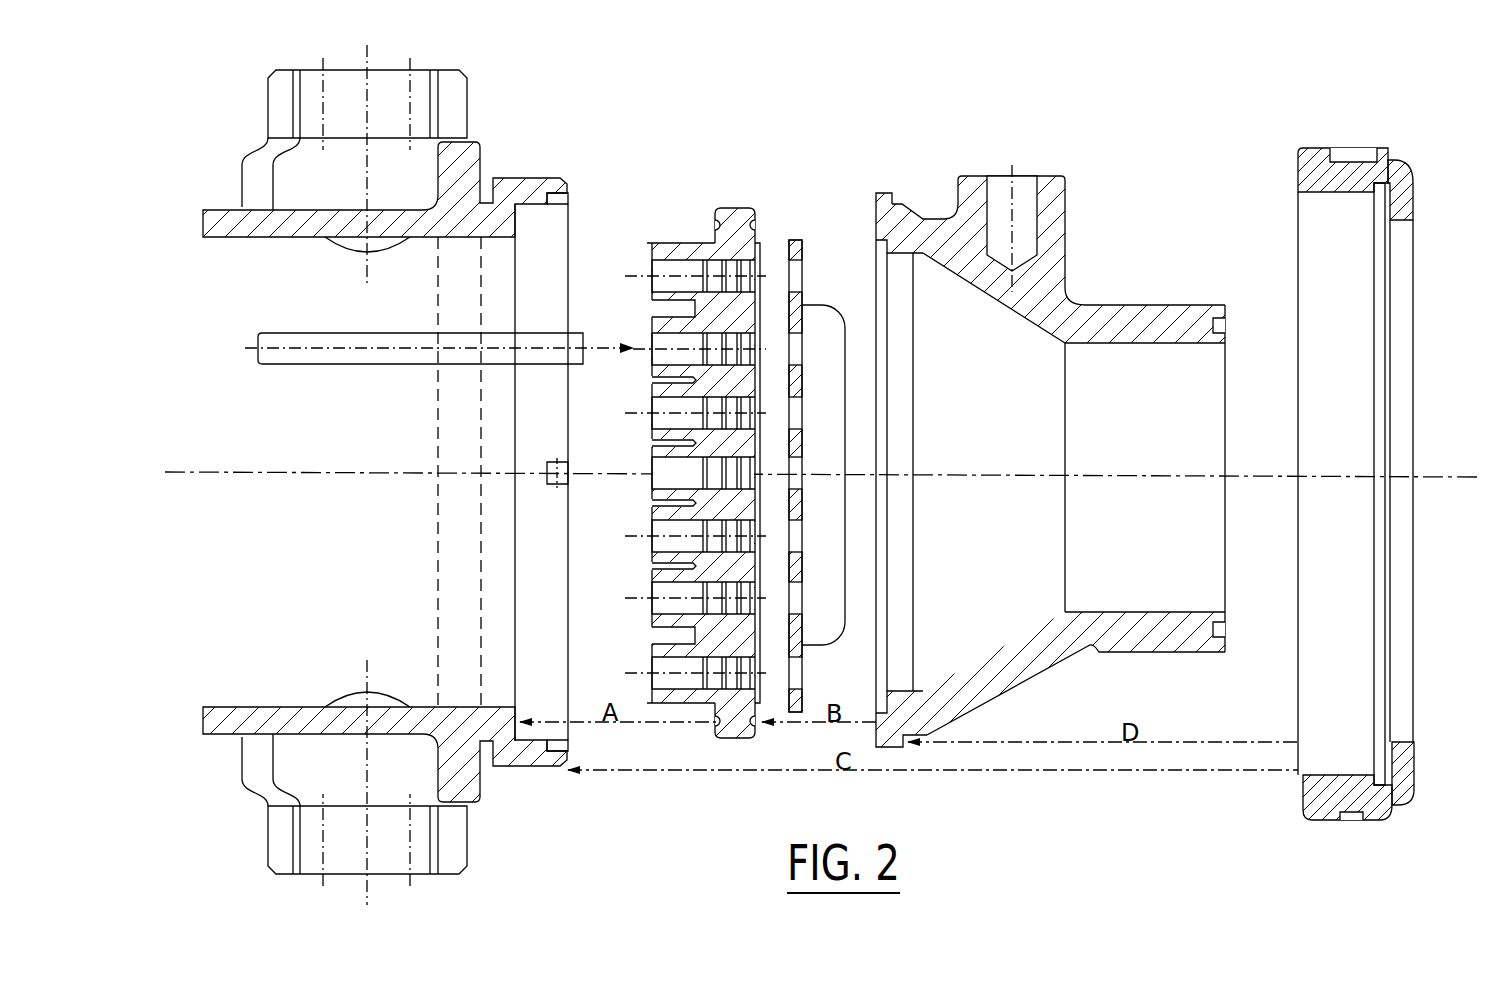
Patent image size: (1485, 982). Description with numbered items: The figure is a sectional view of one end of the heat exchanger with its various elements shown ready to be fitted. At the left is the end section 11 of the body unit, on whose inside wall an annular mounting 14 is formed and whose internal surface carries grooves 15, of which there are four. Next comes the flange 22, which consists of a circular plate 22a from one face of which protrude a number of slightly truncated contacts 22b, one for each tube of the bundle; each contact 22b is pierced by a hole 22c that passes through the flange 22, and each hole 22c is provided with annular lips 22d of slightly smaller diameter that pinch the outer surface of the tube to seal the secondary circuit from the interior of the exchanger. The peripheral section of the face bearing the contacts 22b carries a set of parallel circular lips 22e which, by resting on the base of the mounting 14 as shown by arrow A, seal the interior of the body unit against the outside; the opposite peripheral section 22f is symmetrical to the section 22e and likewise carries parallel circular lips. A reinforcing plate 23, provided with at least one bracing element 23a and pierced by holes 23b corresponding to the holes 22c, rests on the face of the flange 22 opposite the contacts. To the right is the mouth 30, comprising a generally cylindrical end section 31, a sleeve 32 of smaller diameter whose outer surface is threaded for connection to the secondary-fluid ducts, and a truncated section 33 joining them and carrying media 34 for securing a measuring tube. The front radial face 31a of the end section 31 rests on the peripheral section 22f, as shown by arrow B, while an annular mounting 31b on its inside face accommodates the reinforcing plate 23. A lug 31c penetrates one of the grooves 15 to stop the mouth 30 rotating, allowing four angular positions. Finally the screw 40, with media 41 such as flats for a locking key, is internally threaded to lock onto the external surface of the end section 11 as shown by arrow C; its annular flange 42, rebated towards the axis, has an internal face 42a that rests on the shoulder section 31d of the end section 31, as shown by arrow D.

The end section 11 is at (570, 121).
The annular mounting 14 is at (525, 205).
The groove 15 is at (562, 197).
The flange 22 is at (706, 442).
The circular plate 22a is at (744, 216).
The contact point 22b is at (693, 222).
The hole 22c is at (668, 270).
The annular lip 22d is at (727, 289).
The circular lips 22e is at (713, 222).
The peripheral section 22f is at (762, 226).
The reinforcing plate 23 is at (829, 476).
The bracing element 23a is at (827, 615).
The hole 23b is at (801, 360).
The mouth 30 is at (1027, 419).
The end section 31 is at (1027, 419).
The front radial face 31a is at (874, 219).
The annular mounting 31b is at (880, 357).
The lug 31c is at (892, 197).
The shoulder section 31d is at (915, 225).
The sleeve 32 is at (1158, 432).
The truncated section 33 is at (1022, 300).
The media 34 is at (1053, 197).
The screw 40 is at (1378, 459).
The media 41 is at (1345, 146).
The annular flange 42 is at (1402, 200).
The internal face 42a is at (1377, 205).